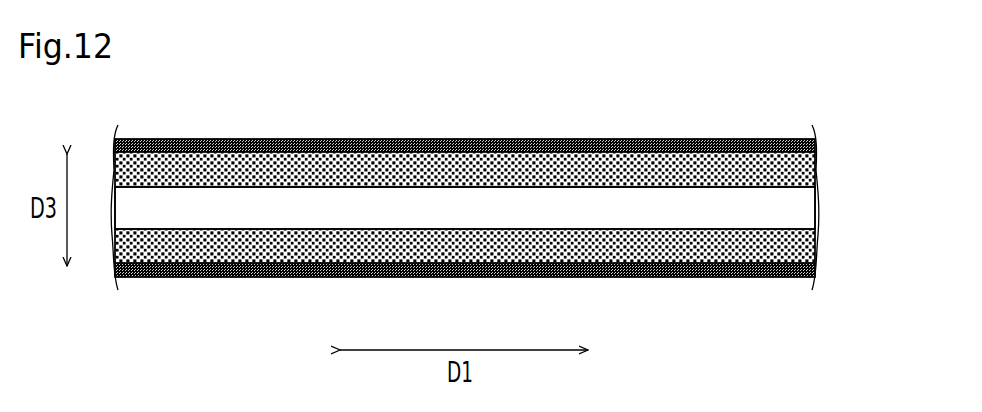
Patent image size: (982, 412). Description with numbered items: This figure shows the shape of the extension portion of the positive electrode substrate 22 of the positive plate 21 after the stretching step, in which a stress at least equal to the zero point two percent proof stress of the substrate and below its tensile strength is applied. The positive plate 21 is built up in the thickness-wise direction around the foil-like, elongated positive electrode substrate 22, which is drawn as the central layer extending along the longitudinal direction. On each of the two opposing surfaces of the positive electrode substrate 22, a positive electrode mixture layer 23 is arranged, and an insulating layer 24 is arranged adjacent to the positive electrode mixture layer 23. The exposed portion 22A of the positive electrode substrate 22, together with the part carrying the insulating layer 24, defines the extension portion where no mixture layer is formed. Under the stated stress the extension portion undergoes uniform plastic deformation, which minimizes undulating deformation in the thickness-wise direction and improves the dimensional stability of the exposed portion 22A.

The positive plate 21 is at (770, 120).
The positive electrode substrate 22 is at (523, 195).
The exposed portion 22A is at (638, 212).
The positive electrode mixture layer 23 is at (260, 140).
The insulating layer 24 is at (375, 166).